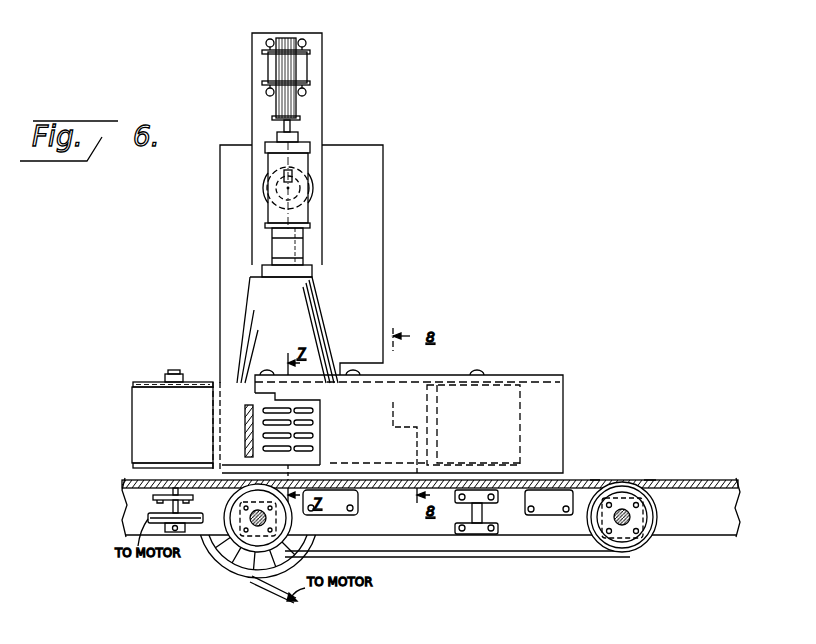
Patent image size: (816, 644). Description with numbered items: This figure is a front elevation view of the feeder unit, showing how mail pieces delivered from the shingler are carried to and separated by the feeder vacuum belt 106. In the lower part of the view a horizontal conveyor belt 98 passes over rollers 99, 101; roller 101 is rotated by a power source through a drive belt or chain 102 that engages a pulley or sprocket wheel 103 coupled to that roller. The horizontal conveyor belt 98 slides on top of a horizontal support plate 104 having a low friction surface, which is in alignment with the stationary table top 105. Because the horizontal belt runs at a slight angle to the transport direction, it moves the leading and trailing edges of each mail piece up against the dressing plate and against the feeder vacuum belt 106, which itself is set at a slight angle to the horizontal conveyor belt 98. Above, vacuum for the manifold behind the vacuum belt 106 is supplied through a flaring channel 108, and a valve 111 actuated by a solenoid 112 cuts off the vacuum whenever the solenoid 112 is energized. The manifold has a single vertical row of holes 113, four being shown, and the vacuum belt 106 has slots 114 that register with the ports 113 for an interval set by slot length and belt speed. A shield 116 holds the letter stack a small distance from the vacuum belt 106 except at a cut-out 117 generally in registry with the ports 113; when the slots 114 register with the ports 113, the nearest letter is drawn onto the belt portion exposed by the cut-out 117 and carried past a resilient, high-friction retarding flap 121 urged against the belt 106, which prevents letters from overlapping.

The horizontal conveyor belt 98 is at (603, 480).
The roller 99 is at (622, 552).
The roller 101 is at (250, 540).
The drive belt or chain 102 is at (276, 595).
The pulley or sprocket wheel 103 is at (303, 562).
The horizontal support plate 104 is at (556, 483).
The stationary table top 105 is at (668, 480).
The feeder vacuum belt 106 is at (216, 383).
The flaring channel 108 is at (326, 296).
The valve 111 is at (303, 167).
The solenoid 112 is at (307, 68).
The holes 113 is at (313, 422).
The slots 114 is at (263, 435).
The shield 116 is at (564, 395).
The cut-out 117 is at (313, 436).
The resilient retarding flap 121 is at (247, 448).